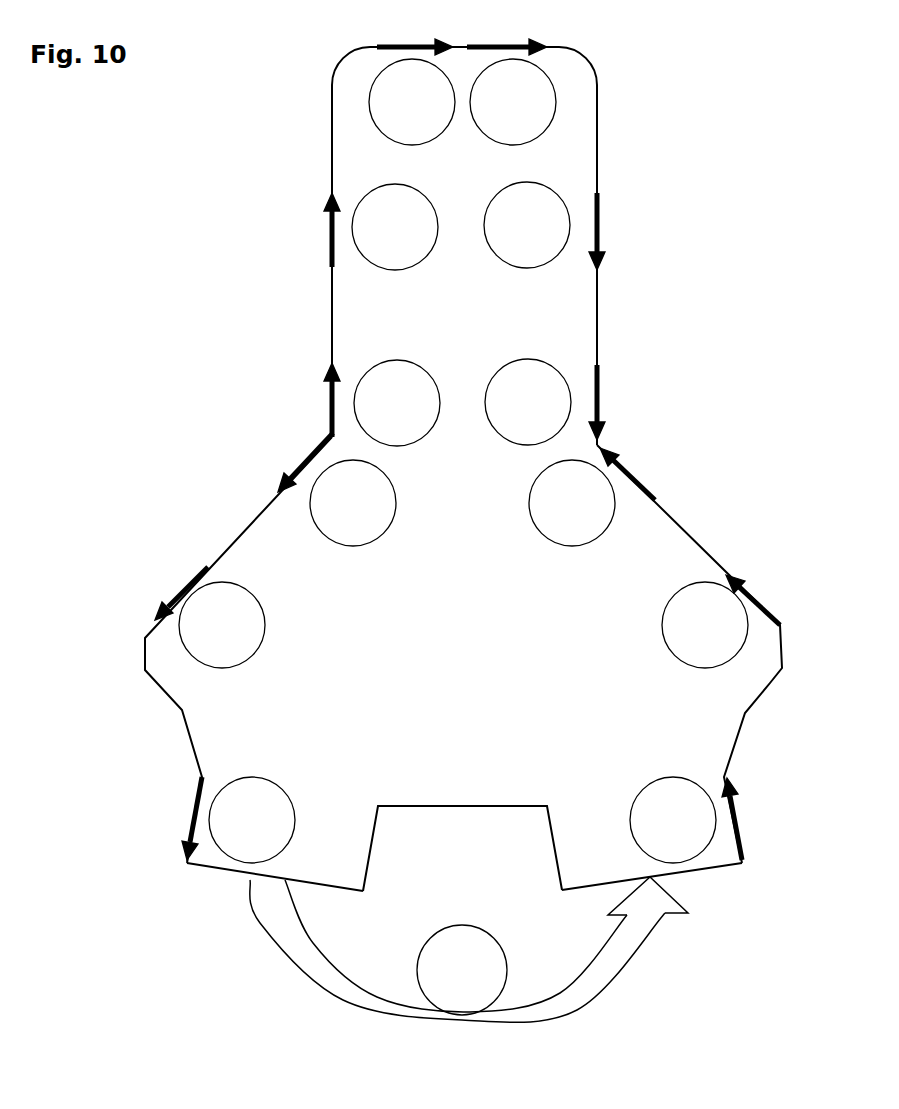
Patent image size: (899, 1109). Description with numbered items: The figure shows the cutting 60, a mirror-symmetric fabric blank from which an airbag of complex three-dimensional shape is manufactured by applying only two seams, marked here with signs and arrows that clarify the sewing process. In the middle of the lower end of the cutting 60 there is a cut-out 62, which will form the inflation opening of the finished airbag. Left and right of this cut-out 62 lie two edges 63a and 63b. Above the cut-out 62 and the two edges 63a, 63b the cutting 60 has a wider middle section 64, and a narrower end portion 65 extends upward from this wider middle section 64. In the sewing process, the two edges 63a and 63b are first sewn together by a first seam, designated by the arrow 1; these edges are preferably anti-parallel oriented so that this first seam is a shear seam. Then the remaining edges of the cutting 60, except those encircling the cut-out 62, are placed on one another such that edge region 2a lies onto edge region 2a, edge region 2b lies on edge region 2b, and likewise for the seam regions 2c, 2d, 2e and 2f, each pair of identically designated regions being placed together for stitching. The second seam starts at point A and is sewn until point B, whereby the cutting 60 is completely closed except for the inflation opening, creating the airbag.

The first seam 1 is at (469, 949).
The edge region 2a is at (375, 453).
The edge region 2b is at (308, 426).
The edge region 2c is at (332, 461).
The edge region 2d is at (593, 461).
The edge region 2e is at (616, 425).
The edge region 2f is at (550, 452).
The cutting 60 is at (320, 240).
The cut-out 62 is at (378, 842).
The edge 63a is at (218, 873).
The edge 63b is at (707, 870).
The wider middle section 64 is at (268, 557).
The narrower end portion 65 is at (580, 140).
The point A is at (325, 432).
The point B is at (613, 435).